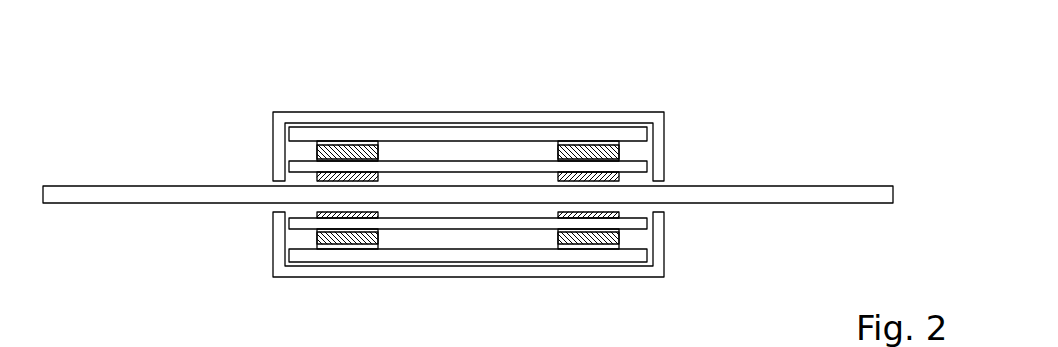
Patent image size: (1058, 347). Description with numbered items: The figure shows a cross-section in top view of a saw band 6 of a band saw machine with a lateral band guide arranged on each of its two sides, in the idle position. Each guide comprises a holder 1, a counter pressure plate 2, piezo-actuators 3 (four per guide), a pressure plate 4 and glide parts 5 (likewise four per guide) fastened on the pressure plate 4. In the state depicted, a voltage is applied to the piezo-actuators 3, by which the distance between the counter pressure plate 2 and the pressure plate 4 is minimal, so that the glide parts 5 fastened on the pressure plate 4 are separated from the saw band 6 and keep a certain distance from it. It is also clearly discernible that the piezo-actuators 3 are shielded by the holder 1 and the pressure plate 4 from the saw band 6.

The holder 1 is at (401, 120).
The counter pressure plate 2 is at (435, 130).
The piezo-actuators 3 is at (582, 150).
The pressure plate 4 is at (475, 168).
The glide parts 5 is at (608, 175).
The saw band 6 is at (727, 195).